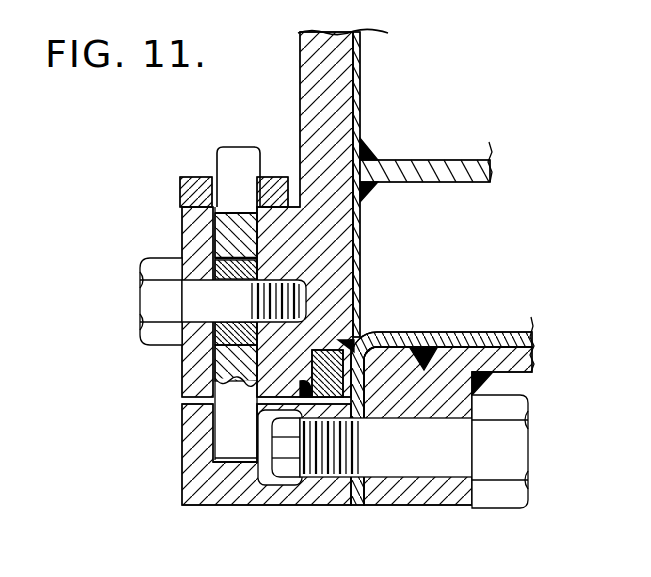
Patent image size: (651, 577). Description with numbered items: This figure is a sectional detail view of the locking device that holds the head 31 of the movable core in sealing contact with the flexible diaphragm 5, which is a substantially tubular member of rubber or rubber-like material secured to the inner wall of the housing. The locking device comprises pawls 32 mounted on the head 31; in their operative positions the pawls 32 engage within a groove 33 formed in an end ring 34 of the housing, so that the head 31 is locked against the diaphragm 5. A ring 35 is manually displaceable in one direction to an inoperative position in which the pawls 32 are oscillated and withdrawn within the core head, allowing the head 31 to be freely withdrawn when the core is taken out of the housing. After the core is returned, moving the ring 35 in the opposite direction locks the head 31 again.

The flexible diaphragm 5 is at (436, 333).
The head 31 is at (322, 101).
The pawls 32 is at (223, 431).
The groove 33 is at (244, 460).
The end ring 34 is at (327, 490).
The ring 35 is at (195, 190).